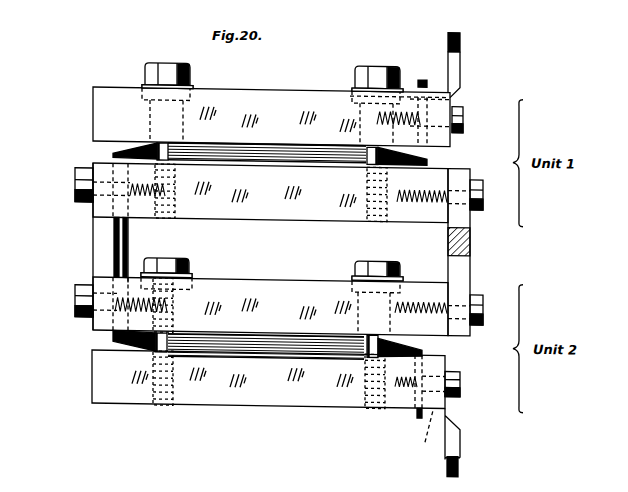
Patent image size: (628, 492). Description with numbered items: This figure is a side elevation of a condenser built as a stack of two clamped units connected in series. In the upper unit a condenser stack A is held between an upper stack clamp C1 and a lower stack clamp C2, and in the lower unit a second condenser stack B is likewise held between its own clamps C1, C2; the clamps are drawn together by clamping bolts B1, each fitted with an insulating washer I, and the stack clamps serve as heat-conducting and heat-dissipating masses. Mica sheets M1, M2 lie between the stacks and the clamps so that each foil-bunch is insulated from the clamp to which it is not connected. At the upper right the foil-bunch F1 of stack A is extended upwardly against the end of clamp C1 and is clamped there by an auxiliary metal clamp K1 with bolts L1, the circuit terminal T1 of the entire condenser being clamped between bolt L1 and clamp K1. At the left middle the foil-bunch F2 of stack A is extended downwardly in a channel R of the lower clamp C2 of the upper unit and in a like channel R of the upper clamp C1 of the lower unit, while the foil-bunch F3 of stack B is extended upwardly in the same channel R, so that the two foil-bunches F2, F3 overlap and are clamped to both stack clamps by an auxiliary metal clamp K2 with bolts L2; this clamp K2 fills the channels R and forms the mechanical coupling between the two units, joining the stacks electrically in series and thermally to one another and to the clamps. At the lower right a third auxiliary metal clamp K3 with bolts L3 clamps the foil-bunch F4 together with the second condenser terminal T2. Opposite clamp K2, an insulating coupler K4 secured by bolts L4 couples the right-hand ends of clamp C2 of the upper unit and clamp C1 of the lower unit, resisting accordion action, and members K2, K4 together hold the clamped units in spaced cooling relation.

The insulating washer I is at (145, 85).
The clamping bolt B1 is at (167, 62).
The upper stack clamp C1 is at (237, 88).
The lower stack clamp C2 is at (241, 218).
The mica sheet M1 is at (154, 141).
The mica sheet M2 is at (390, 163).
The foil-bunch F1 is at (421, 75).
The foil-bunch F2 is at (130, 152).
The foil-bunch F3 is at (113, 228).
The foil-bunch F4 is at (423, 344).
The circuit terminal T1 is at (460, 59).
The second condenser terminal T2 is at (460, 438).
The auxiliary metal clamp K1 is at (452, 91).
The auxiliary metal clamp K2 is at (95, 256).
The auxiliary metal clamp K3 is at (421, 410).
The insulating coupler K4 is at (460, 258).
The bolt L1 is at (463, 112).
The bolt L2 is at (75, 184).
The bolt L3 is at (460, 377).
The bolt L4 is at (480, 176).
The condenser stack A is at (278, 160).
The condenser stack B is at (248, 333).
The channel R is at (129, 281).